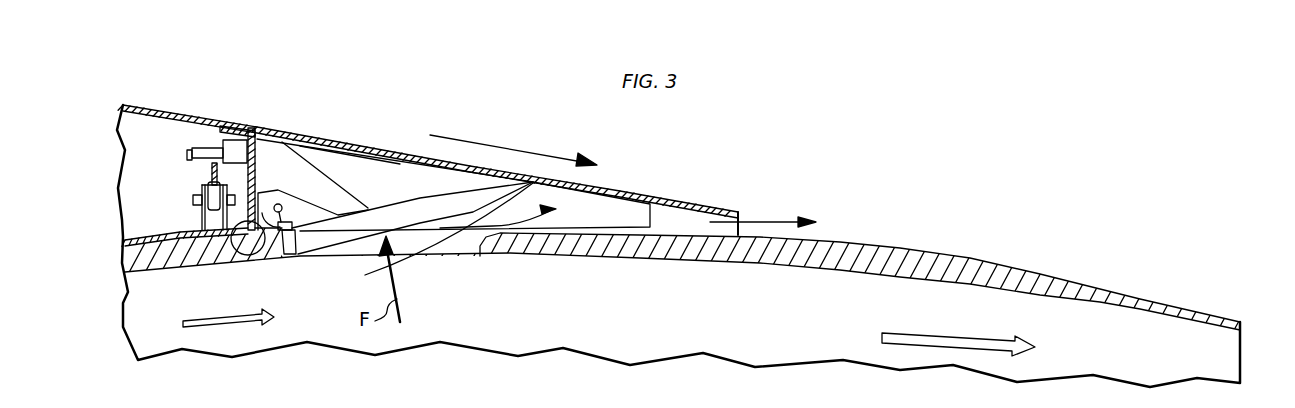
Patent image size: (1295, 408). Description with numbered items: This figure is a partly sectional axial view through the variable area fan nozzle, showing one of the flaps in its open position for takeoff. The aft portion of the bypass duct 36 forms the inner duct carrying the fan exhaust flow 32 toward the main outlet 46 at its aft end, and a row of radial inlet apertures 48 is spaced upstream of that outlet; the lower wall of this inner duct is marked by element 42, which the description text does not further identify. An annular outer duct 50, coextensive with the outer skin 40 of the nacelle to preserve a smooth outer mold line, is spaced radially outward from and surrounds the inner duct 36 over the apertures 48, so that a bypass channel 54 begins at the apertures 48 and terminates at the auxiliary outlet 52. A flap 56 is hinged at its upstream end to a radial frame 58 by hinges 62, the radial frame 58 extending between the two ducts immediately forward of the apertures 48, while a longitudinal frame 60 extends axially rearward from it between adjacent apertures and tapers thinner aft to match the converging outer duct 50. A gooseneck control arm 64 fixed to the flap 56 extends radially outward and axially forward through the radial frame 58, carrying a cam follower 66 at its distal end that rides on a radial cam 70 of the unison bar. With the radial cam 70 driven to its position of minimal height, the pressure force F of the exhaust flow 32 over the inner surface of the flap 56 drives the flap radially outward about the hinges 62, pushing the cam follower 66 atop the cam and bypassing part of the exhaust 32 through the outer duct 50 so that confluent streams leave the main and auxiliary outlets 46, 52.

The exhaust flow 32 is at (489, 140).
The bypass duct 36 is at (629, 319).
The outer skin 40 is at (196, 107).
The inner wall / lower duct wall 42 is at (150, 268).
The main outlet 46 is at (1244, 339).
The inlet apertures 48 is at (456, 260).
The outer duct 50 is at (626, 186).
The auxiliary outlet 52 is at (745, 225).
The bypass channel 54 is at (586, 219).
The flap 56 is at (355, 235).
The radial frame 58 is at (249, 249).
The longitudinal frame 60 is at (369, 166).
The hinge 62 is at (286, 257).
The control arm 64 is at (330, 182).
The cam follower 66 is at (206, 148).
The radial cam 70 is at (207, 170).